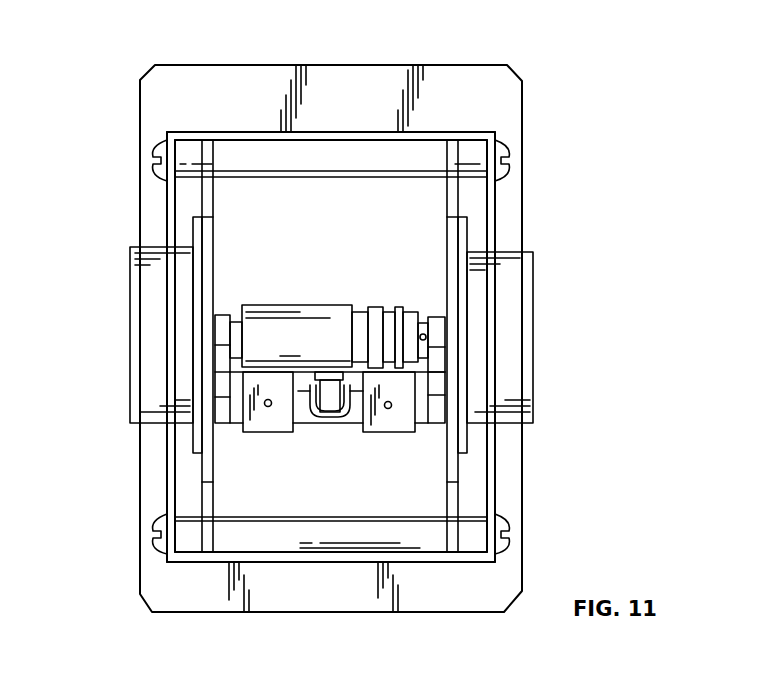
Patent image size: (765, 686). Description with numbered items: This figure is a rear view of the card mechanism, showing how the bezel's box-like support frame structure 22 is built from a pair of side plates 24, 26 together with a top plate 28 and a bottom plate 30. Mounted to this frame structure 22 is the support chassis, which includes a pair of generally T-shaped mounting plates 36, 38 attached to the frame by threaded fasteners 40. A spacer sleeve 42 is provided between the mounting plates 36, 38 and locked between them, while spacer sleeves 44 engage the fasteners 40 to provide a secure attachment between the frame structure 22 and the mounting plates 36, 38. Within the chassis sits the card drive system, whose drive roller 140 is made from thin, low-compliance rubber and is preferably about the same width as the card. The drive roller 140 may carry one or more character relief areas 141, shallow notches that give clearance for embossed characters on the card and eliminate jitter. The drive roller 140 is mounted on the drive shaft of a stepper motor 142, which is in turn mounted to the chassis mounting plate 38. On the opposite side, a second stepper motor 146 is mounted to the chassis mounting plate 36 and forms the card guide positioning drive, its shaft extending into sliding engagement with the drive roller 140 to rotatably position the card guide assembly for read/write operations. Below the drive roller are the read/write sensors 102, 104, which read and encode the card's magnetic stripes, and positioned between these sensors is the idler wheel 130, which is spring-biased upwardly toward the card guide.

The support frame structure 22 is at (261, 115).
The side plate 24 is at (166, 468).
The side plate 26 is at (497, 210).
The top plate 28 is at (334, 131).
The bottom plate 30 is at (330, 563).
The mounting plate 36 is at (214, 226).
The mounting plate 38 is at (447, 226).
The threaded fasteners 40 is at (510, 157).
The spacer sleeve 42 is at (334, 179).
The spacer sleeves 44 is at (189, 152).
The read/write sensor 102 is at (264, 433).
The read/write sensor 104 is at (394, 433).
The idler wheel 130 is at (326, 398).
The drive roller 140 is at (286, 308).
The character relief areas 141 is at (352, 306).
The stepper motor 142 is at (528, 344).
The stepper motor 146 is at (130, 331).